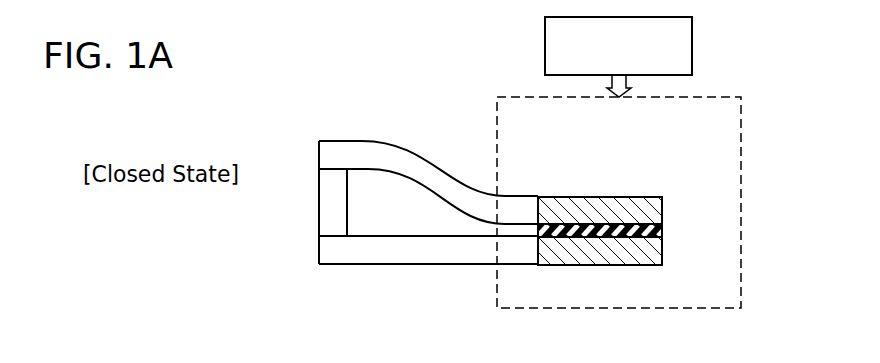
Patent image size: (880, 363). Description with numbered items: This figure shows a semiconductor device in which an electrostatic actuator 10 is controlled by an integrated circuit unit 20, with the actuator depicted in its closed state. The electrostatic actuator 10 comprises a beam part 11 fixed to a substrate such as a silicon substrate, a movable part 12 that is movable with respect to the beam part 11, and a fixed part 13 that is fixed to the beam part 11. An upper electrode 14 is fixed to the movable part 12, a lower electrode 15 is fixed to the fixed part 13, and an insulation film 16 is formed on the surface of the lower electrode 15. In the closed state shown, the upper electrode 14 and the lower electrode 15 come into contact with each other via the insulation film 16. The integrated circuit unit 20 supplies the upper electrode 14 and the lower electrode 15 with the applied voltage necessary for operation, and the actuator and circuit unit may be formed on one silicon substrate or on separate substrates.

The electrostatic actuator 10 is at (751, 167).
The beam part 11 is at (318, 215).
The movable part 12 is at (428, 162).
The fixed part 13 is at (410, 265).
The upper electrode 14 is at (613, 197).
The lower electrode 15 is at (662, 255).
The insulation film 16 is at (662, 230).
The integrated circuit unit 20 is at (692, 47).